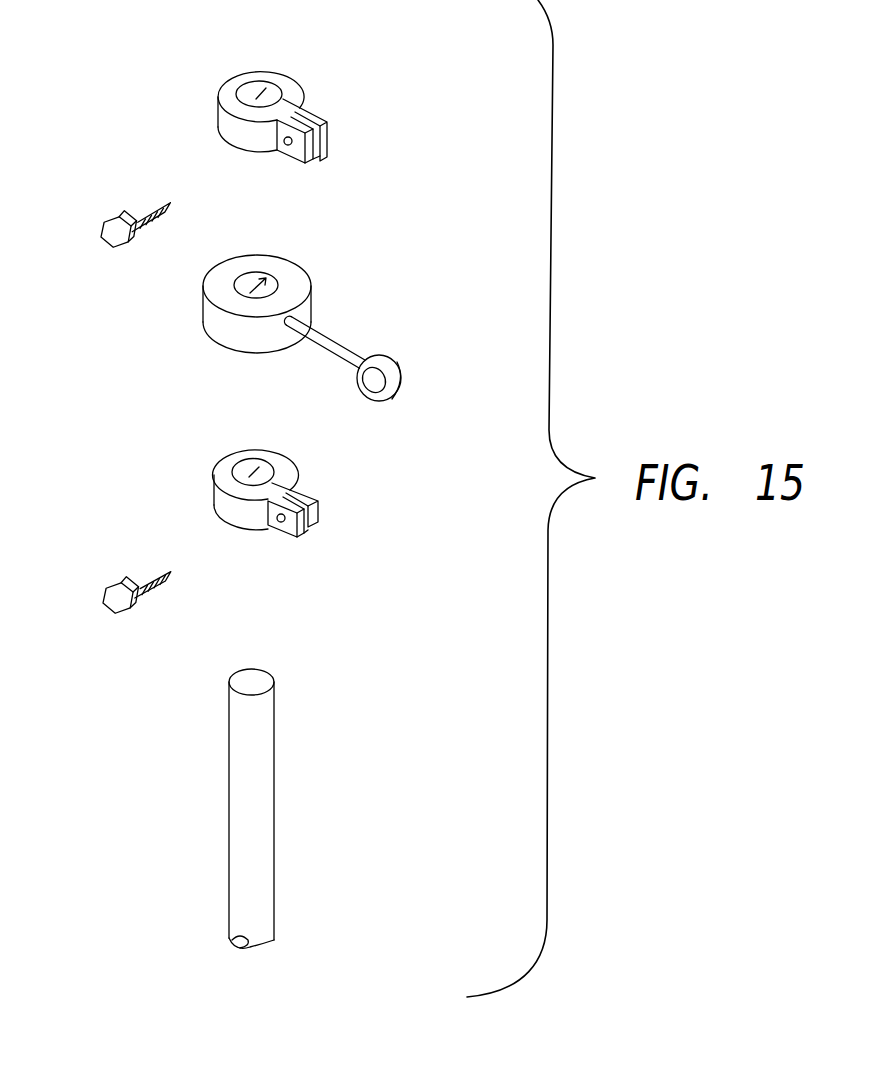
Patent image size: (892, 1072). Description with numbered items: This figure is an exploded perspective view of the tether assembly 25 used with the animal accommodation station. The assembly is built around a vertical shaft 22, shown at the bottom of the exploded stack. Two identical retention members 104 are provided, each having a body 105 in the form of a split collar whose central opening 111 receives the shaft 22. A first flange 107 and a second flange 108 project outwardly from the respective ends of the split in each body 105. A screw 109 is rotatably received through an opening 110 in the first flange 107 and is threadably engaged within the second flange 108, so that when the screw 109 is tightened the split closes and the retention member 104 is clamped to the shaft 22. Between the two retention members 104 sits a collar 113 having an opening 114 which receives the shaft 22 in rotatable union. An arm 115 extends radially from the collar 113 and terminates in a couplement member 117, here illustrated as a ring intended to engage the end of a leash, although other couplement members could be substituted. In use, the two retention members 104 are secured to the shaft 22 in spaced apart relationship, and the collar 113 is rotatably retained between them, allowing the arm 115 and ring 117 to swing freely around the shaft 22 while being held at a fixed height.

The shaft 22 is at (228, 818).
The tether assembly 25 is at (232, 407).
The retention member 104 is at (218, 118).
The body 105 is at (235, 82).
The first flange 107 is at (307, 157).
The second flange 108 is at (333, 132).
The screw 109 is at (112, 257).
The opening 110 is at (282, 144).
The opening 111 is at (261, 96).
The collar 113 is at (203, 325).
The opening 114 is at (266, 278).
The arm 115 is at (337, 348).
The couplement member 117 is at (400, 377).